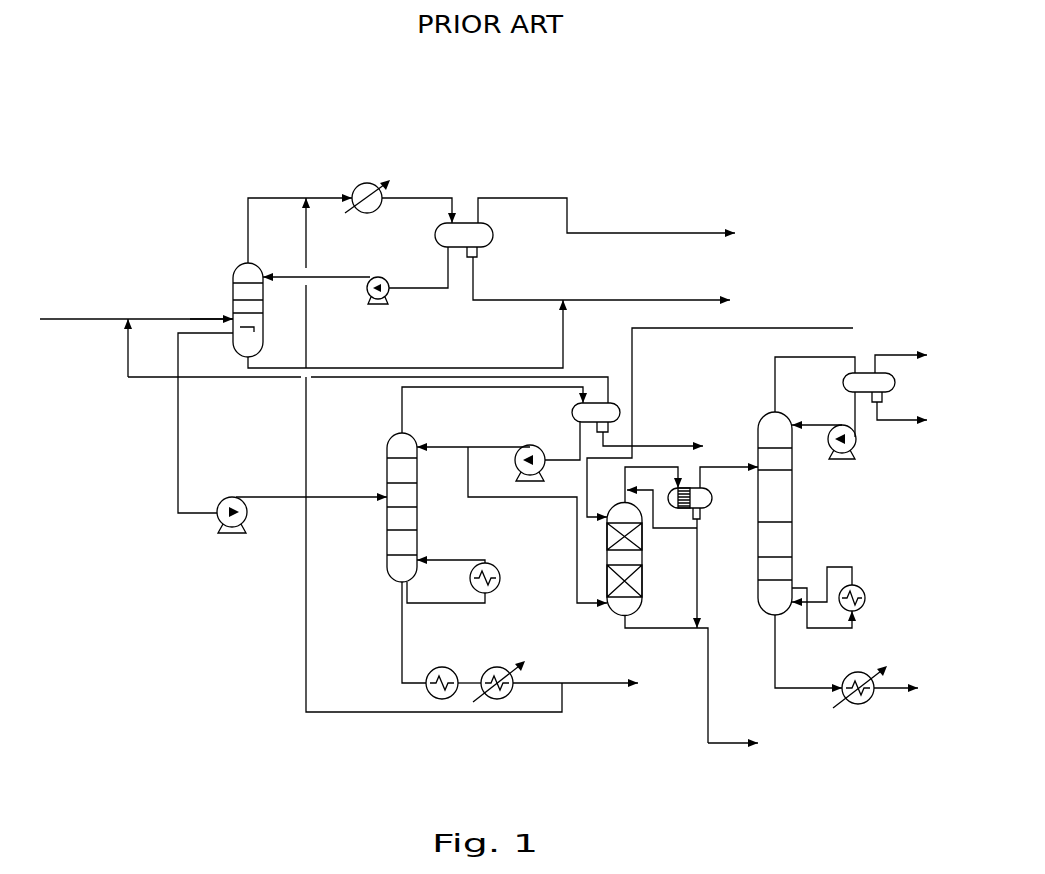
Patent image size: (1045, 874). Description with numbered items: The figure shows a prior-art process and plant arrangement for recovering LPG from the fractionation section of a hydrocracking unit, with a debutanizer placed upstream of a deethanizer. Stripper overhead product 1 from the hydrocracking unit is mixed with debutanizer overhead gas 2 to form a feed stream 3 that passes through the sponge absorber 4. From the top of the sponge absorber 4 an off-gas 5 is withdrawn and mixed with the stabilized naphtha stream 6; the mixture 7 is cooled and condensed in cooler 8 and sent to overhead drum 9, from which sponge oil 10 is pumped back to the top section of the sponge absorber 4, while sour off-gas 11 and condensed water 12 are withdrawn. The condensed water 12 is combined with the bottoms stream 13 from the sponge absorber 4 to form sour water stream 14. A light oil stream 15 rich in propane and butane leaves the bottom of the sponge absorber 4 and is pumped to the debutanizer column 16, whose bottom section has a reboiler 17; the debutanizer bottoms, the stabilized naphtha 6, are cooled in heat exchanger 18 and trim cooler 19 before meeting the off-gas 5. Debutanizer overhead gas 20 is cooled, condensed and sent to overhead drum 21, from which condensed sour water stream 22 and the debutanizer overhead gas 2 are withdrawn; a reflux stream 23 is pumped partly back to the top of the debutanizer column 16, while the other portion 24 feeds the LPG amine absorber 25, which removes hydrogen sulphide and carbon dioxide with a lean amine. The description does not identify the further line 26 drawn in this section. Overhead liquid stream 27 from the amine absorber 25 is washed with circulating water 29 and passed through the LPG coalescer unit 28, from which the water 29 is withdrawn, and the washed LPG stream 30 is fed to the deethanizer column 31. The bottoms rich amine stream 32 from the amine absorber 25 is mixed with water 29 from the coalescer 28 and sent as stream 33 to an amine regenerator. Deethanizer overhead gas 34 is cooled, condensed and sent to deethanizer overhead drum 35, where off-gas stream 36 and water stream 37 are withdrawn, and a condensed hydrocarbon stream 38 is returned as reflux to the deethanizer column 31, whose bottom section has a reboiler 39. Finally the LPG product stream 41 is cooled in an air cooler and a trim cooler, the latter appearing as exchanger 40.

The stripper overhead product 1 is at (136, 308).
The debutanizer overhead gas 2 is at (359, 361).
The feed stream 3 is at (211, 308).
The sponge absorber 4 is at (233, 283).
The off-gas 5 is at (300, 215).
The stabilized naphtha stream 6 is at (432, 455).
The mixture 7 is at (390, 195).
The cooler 8 is at (367, 183).
The overhead drum 9 is at (462, 223).
The sponge oil 10 is at (355, 275).
The sour off-gas 11 is at (606, 217).
The condensed water 12 is at (518, 295).
The bottoms stream 13 is at (407, 335).
The sour water stream 14 is at (646, 289).
The light oil stream 15 is at (265, 433).
The debutanizer column 16 is at (387, 455).
The reboiler 17 is at (502, 585).
The heat exchanger 18 is at (440, 668).
The trim cooler 19 is at (497, 668).
The overhead gas 20 is at (494, 410).
The overhead drum 21 is at (572, 408).
The condensed sour water stream 22 is at (653, 435).
The reflux stream 23 is at (498, 451).
The portion 24 is at (537, 527).
The LPG amine absorber 25 is at (620, 613).
The hydrogen gas line 26 is at (722, 410).
The overhead liquid stream 27 is at (660, 473).
The LPG coalescer unit 28 is at (712, 500).
The circulating water stream 29 is at (664, 557).
The washed LPG stream 30 is at (729, 463).
The deethanizer column 31 is at (758, 432).
The bottoms rich amine stream 32 is at (666, 679).
The stream to amine regenerator 33 is at (730, 756).
The deethanizer overhead gas 34 is at (812, 371).
The deethanizer overhead drum 35 is at (863, 372).
The off-gas stream 36 is at (904, 348).
The water stream 37 is at (905, 428).
The condensed HC-stream 38 is at (824, 425).
The reboiler 39 is at (866, 596).
The product cooler 40 is at (875, 702).
The LPG product stream 41 is at (806, 669).